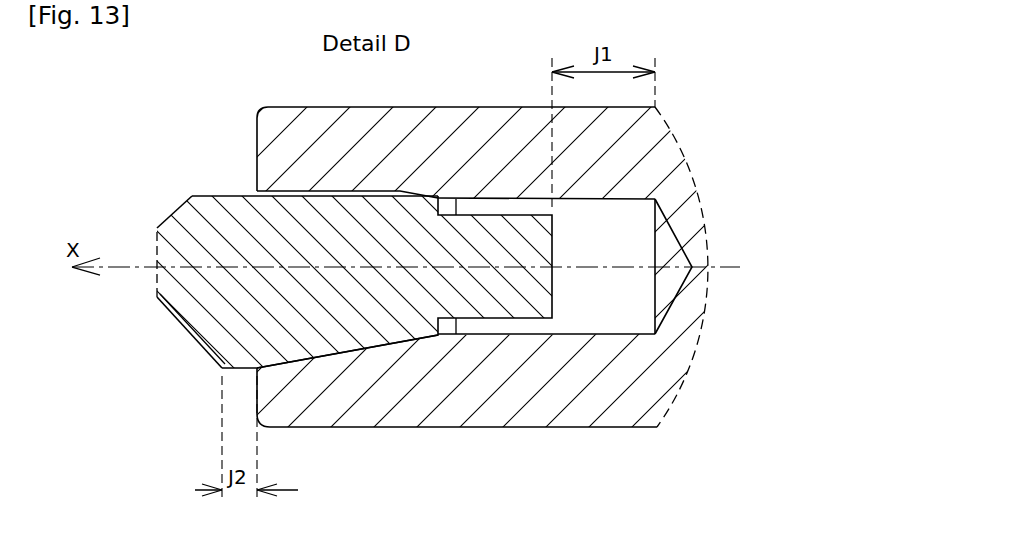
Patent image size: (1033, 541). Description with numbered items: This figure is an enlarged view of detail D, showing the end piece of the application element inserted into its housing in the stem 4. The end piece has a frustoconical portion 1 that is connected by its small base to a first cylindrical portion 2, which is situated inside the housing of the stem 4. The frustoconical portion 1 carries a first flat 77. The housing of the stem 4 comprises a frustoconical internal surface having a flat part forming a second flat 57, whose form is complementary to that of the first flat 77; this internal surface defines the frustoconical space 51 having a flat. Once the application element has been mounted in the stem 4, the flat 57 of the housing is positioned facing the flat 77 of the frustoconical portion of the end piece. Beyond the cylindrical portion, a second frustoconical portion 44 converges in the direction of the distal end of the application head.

The frustoconical portion 1 is at (262, 304).
The first cylindrical portion 2 is at (231, 220).
The stem 4 is at (515, 142).
The second frustoconical portion 44 is at (188, 226).
The frustoconical space having a flat 51 is at (373, 347).
The second flat 57 is at (380, 197).
The first flat 77 is at (315, 220).